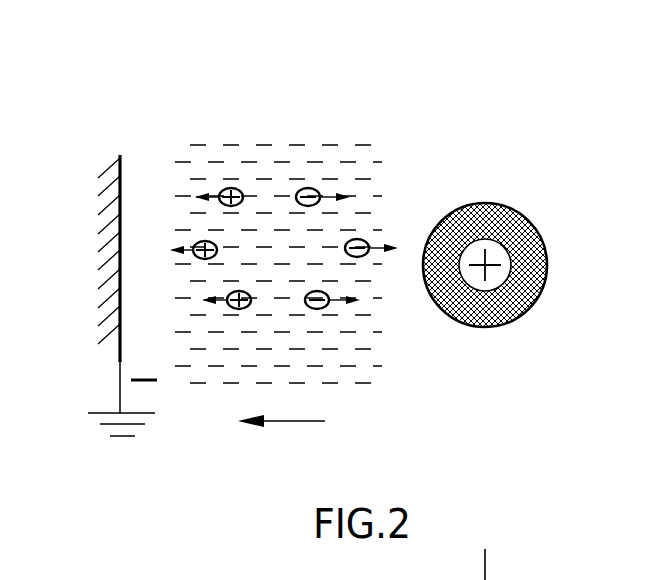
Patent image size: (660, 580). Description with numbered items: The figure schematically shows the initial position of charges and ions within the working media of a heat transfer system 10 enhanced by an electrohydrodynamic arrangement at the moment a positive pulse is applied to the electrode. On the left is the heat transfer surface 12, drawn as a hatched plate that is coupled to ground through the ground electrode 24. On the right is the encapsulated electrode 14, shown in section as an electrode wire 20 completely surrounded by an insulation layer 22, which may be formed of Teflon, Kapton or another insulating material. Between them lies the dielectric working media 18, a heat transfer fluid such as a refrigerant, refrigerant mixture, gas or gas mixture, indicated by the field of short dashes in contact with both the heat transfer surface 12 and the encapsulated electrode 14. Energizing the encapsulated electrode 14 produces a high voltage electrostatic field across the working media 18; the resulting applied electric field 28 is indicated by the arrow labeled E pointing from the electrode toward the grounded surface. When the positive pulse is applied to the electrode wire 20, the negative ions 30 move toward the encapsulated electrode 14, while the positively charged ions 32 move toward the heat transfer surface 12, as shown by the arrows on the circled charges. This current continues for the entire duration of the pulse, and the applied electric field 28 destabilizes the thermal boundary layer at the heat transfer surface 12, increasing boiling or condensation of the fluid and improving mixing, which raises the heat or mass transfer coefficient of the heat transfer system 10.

The heat transfer system 10 is at (351, 116).
The heat transfer surface 12 is at (121, 165).
The encapsulated electrode 14 is at (541, 199).
The dielectric working media 18 is at (367, 345).
The electrode wire 20 is at (495, 280).
The insulation layer 22 is at (546, 284).
The ground electrode 24 is at (120, 393).
The applied electric field 28 is at (293, 422).
The negative ions 30 is at (317, 290).
The positively charged ions 32 is at (247, 293).